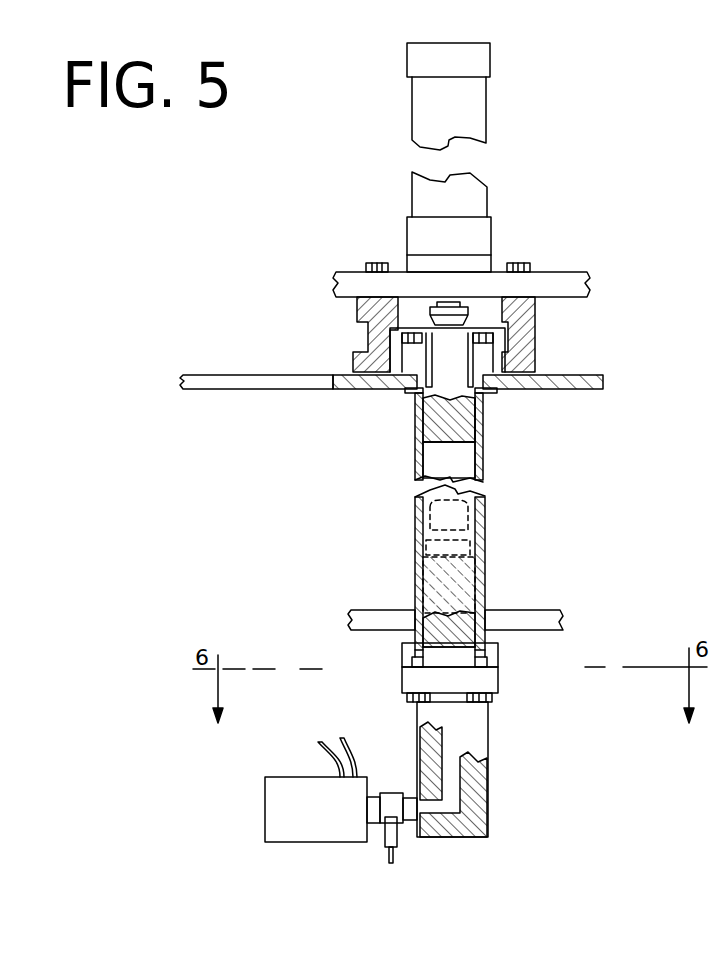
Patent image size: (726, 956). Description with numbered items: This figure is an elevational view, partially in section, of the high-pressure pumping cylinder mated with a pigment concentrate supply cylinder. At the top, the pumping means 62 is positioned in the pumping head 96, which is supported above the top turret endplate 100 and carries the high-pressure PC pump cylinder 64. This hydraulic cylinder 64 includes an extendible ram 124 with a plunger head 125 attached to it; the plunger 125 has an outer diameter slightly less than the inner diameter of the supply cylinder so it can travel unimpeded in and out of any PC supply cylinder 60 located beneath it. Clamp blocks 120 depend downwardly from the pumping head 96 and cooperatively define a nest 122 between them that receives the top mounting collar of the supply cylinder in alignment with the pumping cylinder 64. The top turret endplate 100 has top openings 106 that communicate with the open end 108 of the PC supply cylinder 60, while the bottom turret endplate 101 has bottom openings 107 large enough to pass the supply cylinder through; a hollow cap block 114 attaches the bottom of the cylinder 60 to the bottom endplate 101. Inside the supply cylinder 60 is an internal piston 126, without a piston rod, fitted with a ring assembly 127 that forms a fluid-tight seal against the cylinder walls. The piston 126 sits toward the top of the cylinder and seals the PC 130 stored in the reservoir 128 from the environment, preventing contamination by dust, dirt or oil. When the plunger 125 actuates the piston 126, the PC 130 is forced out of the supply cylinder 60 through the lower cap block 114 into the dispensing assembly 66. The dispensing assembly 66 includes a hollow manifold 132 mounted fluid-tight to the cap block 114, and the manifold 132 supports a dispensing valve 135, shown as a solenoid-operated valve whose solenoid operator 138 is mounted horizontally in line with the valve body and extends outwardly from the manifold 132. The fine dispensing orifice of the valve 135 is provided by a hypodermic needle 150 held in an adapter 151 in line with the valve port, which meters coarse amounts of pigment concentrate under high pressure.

The pumping means 62 is at (405, 88).
The high-pressure PC pump cylinder 64 is at (470, 108).
The pumping head 96 is at (412, 202).
The clamp blocks 120 is at (417, 310).
The nest 122 is at (360, 342).
The plunger head 125 is at (467, 311).
The top turret endplate 100 is at (247, 376).
The top openings 106 is at (543, 375).
The PC supply cylinder 60 is at (413, 430).
The open end 108 is at (472, 402).
The internal piston 126 is at (463, 423).
The ring assembly 127 is at (483, 442).
The reservoir 128 is at (430, 457).
The ram 124 is at (417, 528).
The bottom openings 107 is at (487, 610).
The bottom turret endplate 101 is at (533, 610).
The PC 130 is at (420, 632).
The hollow cap block 114 is at (402, 660).
The dispensing assembly 66 is at (490, 803).
The manifold 132 is at (487, 753).
The adapter 151 is at (398, 835).
The hypodermic needle 150 is at (397, 857).
The dispensing valve 135 is at (265, 800).
The solenoid operator 138 is at (322, 830).